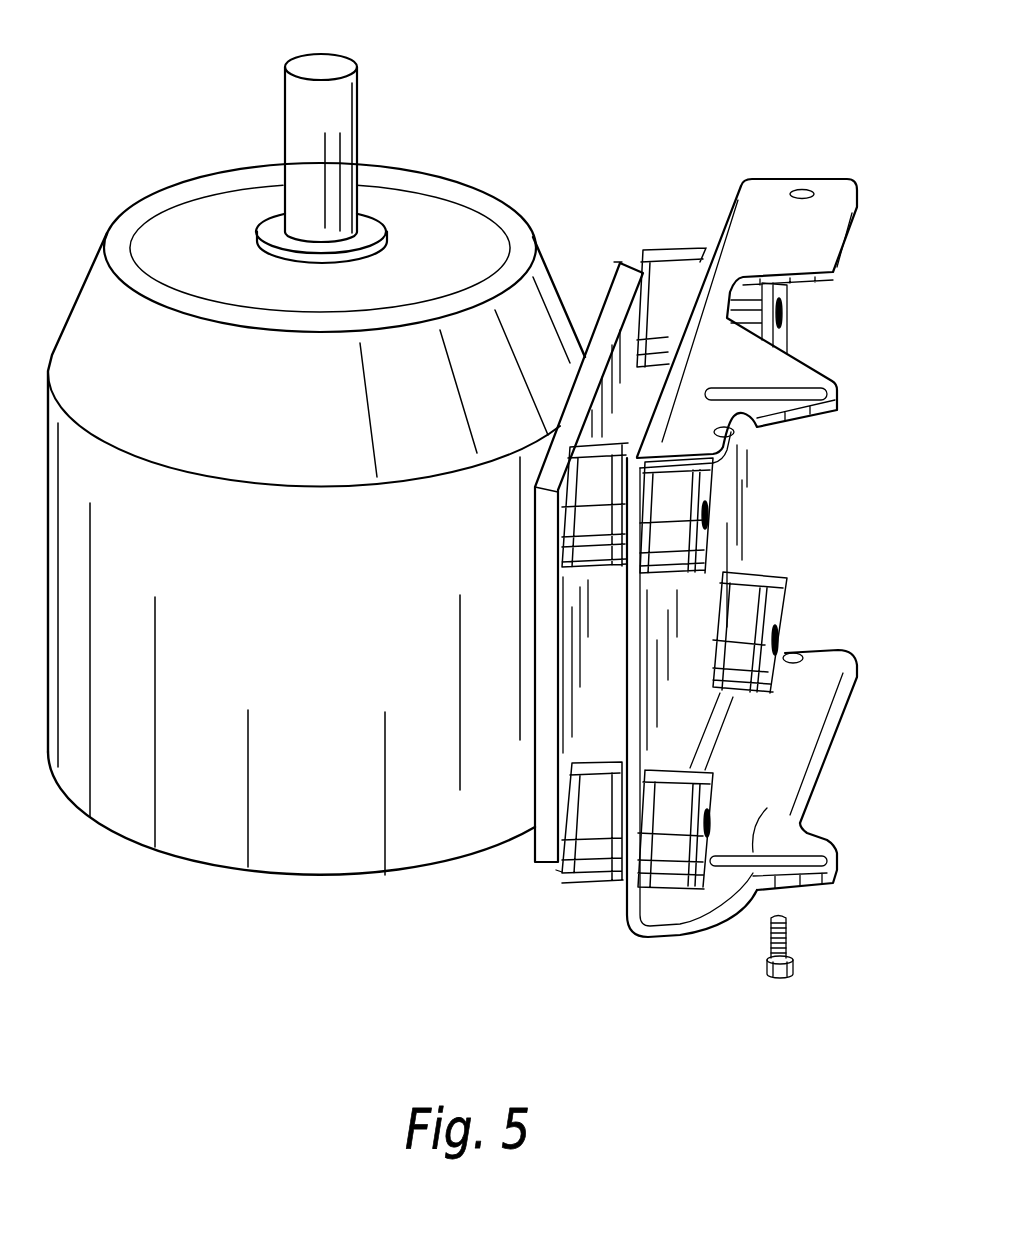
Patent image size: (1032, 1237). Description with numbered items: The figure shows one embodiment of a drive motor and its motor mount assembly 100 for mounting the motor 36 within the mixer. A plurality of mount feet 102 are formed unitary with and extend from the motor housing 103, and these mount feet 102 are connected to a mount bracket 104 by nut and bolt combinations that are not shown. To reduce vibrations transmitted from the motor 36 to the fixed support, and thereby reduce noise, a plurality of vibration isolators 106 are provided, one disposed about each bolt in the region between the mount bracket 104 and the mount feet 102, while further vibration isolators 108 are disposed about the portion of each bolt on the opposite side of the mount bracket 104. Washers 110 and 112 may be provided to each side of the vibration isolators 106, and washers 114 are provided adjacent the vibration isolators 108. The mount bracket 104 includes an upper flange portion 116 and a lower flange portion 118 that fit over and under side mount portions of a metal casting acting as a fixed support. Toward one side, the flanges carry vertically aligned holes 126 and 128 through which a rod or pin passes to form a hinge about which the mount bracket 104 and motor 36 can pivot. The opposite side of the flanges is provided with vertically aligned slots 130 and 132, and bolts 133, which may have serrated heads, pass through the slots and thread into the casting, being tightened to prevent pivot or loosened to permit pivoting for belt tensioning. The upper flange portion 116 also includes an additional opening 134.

The motor 36 is at (316, 521).
The mount assembly 100 is at (714, 113).
The mount feet 102 is at (577, 302).
The motor housing 103 is at (430, 805).
The mount bracket 104 is at (766, 345).
The vibration isolators 106 is at (667, 280).
The vibration isolators 108 is at (765, 580).
The washers 110 is at (712, 575).
The washers 112 is at (620, 300).
The washers 114 is at (790, 302).
The upper flange portion 116 is at (813, 251).
The lower flange portion 118 is at (775, 747).
The hole 126 is at (800, 188).
The hole 128 is at (805, 655).
The slot 130 is at (790, 392).
The slot 132 is at (753, 852).
The bolts 133 is at (795, 962).
The additional opening 134 is at (757, 420).